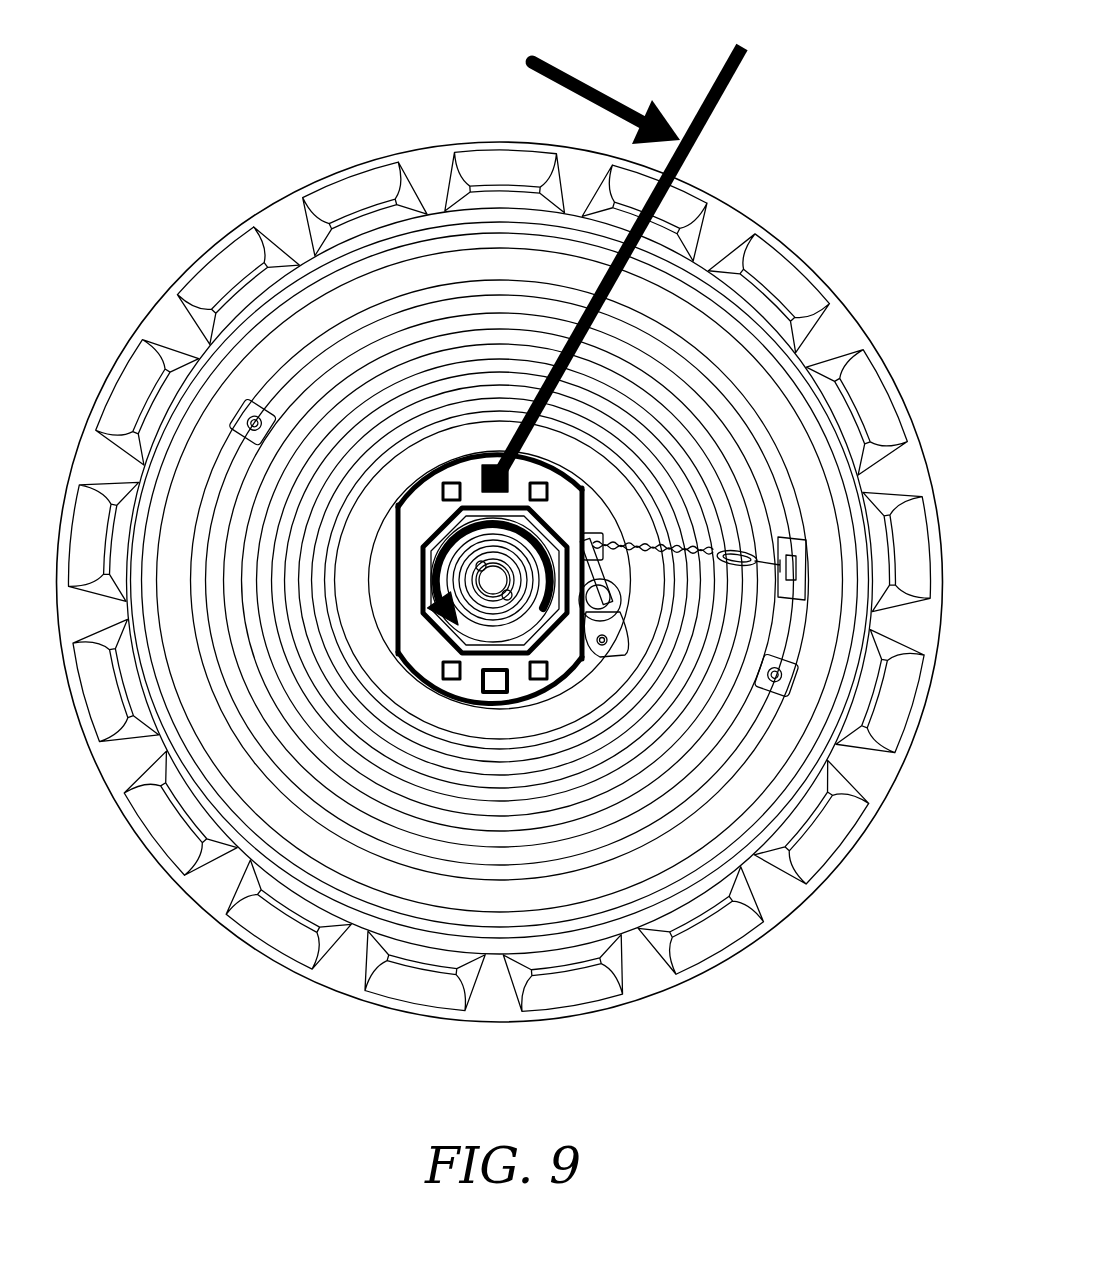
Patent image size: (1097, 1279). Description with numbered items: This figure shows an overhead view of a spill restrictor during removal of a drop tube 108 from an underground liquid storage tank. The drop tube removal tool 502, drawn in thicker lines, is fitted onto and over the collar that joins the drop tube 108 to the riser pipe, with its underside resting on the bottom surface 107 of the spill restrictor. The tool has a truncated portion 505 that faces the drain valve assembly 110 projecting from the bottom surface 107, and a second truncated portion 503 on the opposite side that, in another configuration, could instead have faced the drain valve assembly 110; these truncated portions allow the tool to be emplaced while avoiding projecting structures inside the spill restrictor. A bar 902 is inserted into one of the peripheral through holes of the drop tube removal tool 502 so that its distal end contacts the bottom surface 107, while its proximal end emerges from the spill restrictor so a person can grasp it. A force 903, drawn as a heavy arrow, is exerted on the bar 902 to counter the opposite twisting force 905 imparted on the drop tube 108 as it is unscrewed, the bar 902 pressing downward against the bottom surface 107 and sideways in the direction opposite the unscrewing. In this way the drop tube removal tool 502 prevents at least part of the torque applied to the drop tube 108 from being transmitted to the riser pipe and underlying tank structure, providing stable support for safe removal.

The bottom surface 107 is at (380, 597).
The drop tube 108 is at (548, 532).
The drain valve assembly 110 is at (628, 617).
The drop tube removal tool 502 is at (545, 463).
The truncated portion 503 is at (393, 633).
The truncated portion 505 is at (582, 653).
The bar 902 is at (722, 100).
The insertion direction arrow 903 is at (587, 82).
The twisting force 905 is at (441, 548).